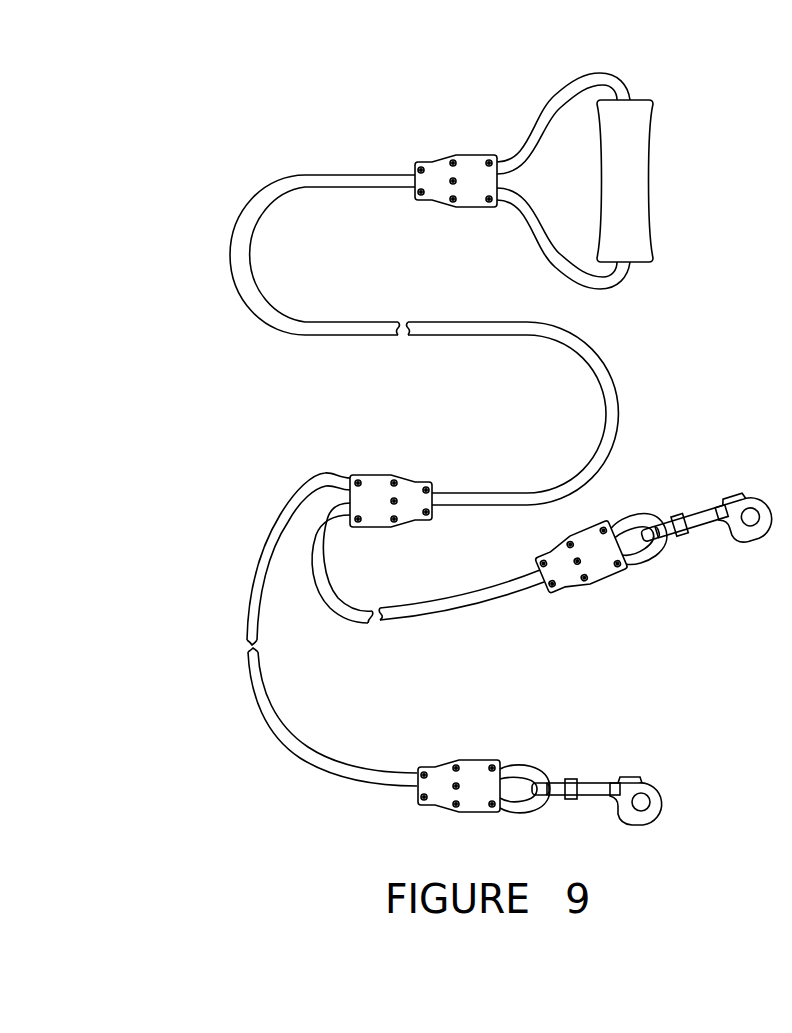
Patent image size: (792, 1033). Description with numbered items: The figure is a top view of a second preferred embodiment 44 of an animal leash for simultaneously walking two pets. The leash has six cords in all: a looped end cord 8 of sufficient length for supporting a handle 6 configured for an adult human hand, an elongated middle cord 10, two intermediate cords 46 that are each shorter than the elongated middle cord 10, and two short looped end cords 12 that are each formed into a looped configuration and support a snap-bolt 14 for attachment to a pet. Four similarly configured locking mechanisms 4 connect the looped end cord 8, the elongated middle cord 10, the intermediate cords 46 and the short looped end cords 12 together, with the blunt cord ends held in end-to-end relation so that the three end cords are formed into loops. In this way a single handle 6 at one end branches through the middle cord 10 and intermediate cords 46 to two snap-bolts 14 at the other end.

The locking mechanism 4 is at (450, 155).
The handle 6 is at (652, 158).
The looped end cord 8 is at (538, 238).
The elongated middle cord 10 is at (424, 278).
The short looped end cord 12 is at (650, 565).
The snap-bolt 14 is at (708, 523).
The second preferred embodiment 44 is at (335, 143).
The intermediate cord 46 is at (312, 477).